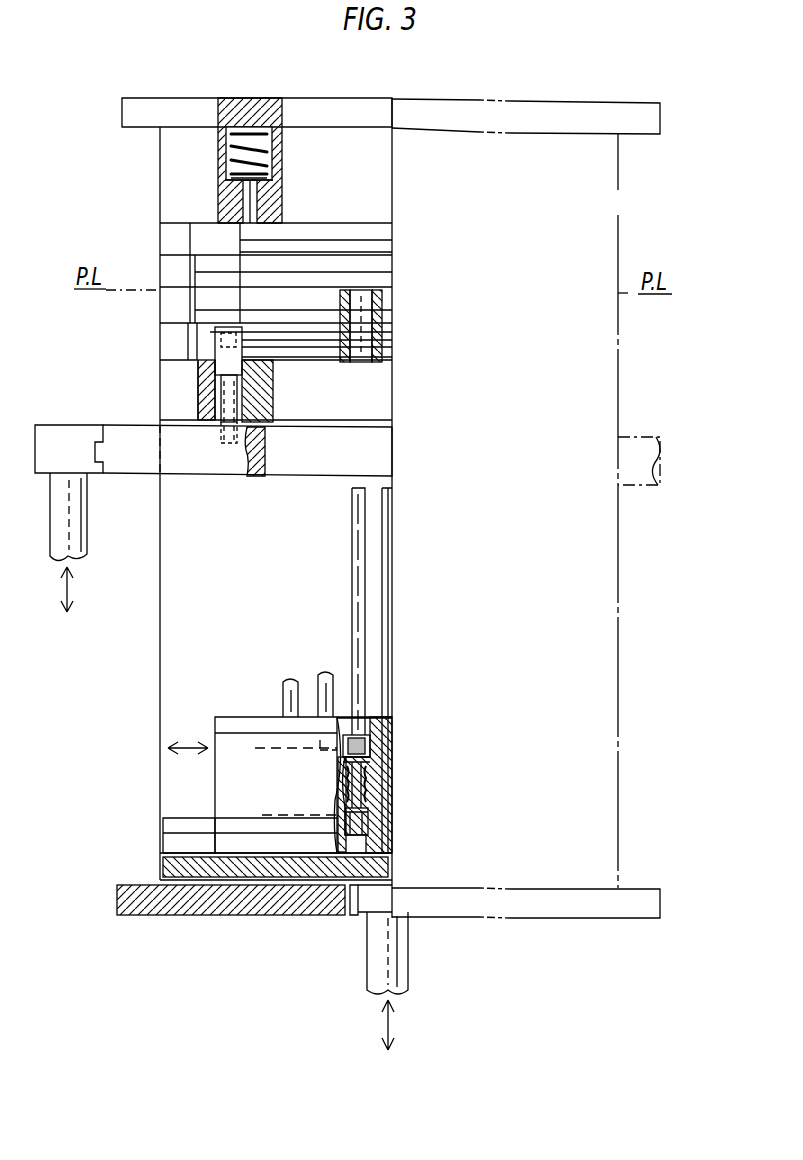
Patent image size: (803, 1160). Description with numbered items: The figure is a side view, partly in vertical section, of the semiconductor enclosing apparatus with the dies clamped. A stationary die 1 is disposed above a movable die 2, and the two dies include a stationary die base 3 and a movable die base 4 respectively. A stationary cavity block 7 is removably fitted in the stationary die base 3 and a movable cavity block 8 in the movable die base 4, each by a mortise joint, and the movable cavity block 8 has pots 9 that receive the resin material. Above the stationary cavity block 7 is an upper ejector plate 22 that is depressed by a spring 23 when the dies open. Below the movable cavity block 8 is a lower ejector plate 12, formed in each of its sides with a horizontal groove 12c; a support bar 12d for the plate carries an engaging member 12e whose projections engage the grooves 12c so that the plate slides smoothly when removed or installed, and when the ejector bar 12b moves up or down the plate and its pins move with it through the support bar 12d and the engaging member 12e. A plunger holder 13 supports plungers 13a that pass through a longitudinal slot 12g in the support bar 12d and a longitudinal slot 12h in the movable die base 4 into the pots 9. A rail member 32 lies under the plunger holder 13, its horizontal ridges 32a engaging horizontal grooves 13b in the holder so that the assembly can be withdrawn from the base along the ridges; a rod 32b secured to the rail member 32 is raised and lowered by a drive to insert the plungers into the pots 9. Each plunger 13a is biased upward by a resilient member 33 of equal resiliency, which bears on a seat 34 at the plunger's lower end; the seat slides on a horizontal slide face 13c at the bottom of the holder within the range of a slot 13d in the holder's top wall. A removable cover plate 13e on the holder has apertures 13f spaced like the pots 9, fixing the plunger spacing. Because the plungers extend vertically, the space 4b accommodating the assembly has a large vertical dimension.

The stationary die 1 is at (163, 97).
The movable die 2 is at (185, 918).
The stationary die base 3 is at (162, 160).
The movable die base 4 is at (172, 385).
The space 4b is at (232, 566).
The stationary cavity block 7 is at (320, 288).
The movable cavity block 8 is at (318, 363).
The pot 9 is at (366, 356).
The lower ejector plate 12 is at (320, 342).
The ejector bar 12b is at (80, 503).
The horizontal groove 12c is at (302, 352).
The support bar 12d is at (205, 476).
The engaging member 12e is at (232, 345).
The longitudinal slot 12g is at (268, 456).
The longitudinal slot 12h is at (275, 388).
The plunger holder 13 is at (233, 716).
The plunger 13a is at (388, 560).
The horizontal groove 13b is at (247, 826).
The horizontal slide face 13c is at (336, 822).
The slot 13d is at (312, 718).
The cover plate 13e is at (262, 718).
The aperture 13f is at (358, 738).
The upper ejector plate 22 is at (305, 242).
The spring 23 is at (284, 156).
The rail member 32 is at (170, 866).
The horizontal ridge 32a is at (183, 826).
The rod 32b is at (378, 938).
The resilient member 33 is at (374, 780).
The seat 34 is at (372, 815).